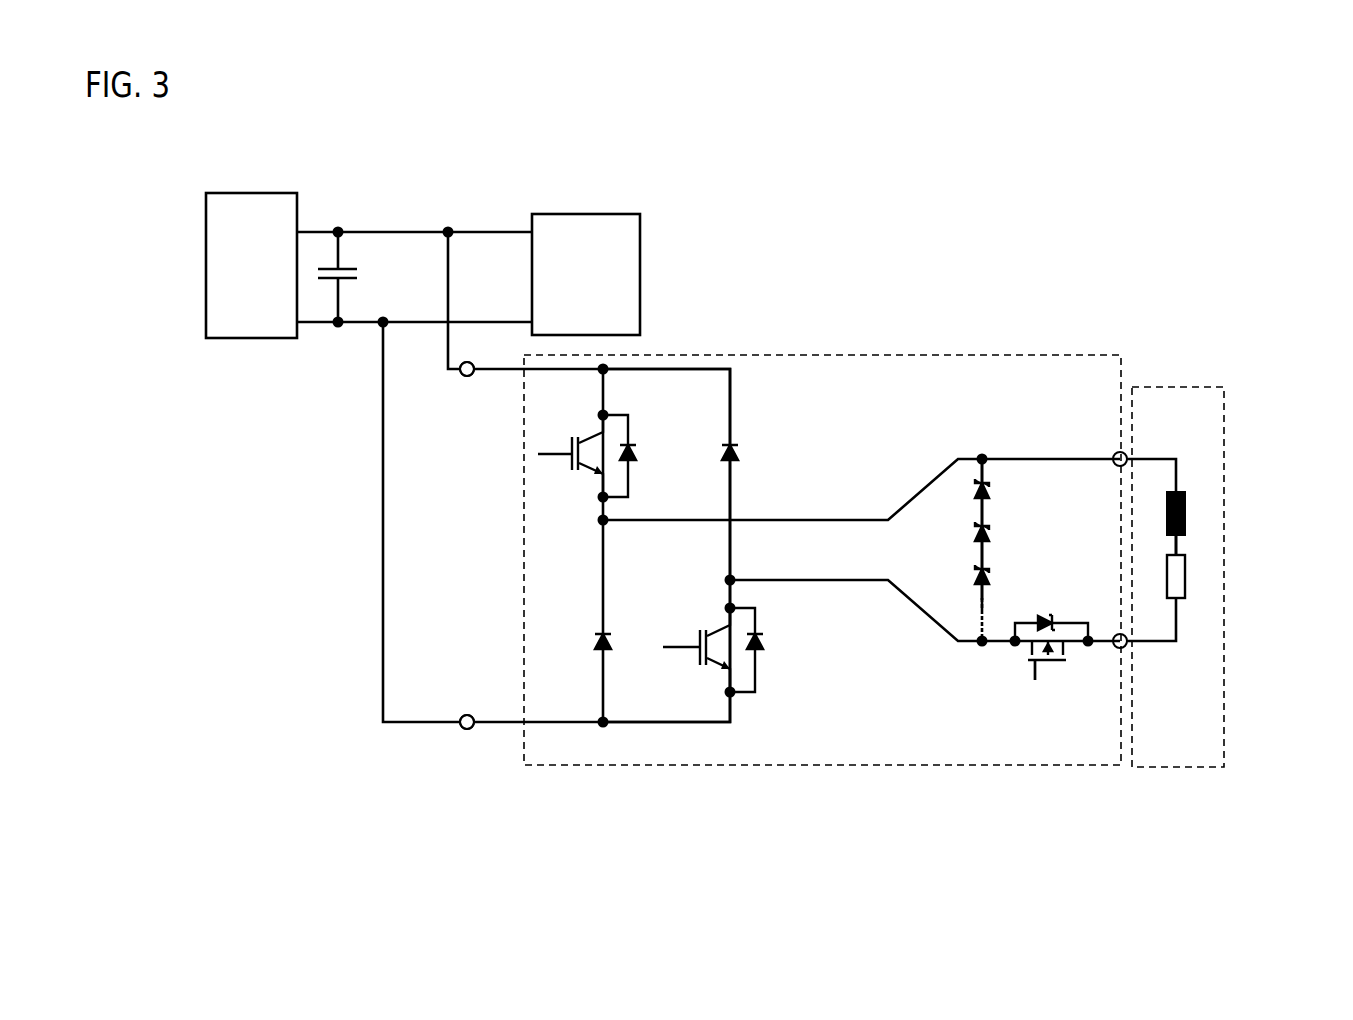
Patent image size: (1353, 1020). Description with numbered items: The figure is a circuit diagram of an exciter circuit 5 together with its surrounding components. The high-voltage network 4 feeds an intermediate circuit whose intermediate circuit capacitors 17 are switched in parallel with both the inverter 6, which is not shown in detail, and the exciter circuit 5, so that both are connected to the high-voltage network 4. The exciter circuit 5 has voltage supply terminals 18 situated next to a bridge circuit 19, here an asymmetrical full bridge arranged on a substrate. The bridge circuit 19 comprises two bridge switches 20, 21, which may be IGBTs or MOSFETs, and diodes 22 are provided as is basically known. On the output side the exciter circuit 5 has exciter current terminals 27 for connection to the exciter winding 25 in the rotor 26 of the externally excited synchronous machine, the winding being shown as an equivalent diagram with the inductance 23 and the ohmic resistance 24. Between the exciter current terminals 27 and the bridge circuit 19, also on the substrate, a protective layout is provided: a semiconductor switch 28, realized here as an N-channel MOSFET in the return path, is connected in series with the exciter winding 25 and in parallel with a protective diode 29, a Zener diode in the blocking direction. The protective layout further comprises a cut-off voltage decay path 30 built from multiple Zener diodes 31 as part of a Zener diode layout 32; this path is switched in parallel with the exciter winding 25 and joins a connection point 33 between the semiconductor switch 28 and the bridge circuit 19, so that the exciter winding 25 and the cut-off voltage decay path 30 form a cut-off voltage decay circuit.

The high-voltage network 4 is at (263, 340).
The inverter 6 is at (588, 215).
The intermediate circuit capacitors 17 is at (364, 279).
The voltage supply terminals 18 is at (462, 380).
The bridge circuit 19 is at (742, 407).
The exciter circuit 5 is at (985, 388).
The bridge switch 20 is at (566, 462).
The bridge switch 21 is at (712, 672).
The freewheeling diodes 22 is at (650, 443).
The inductance 23 is at (1185, 512).
The ohmic resistance 24 is at (1185, 578).
The exciter winding 25 is at (1190, 538).
The rotor 26 is at (1224, 730).
The exciter current terminals 27 is at (1113, 452).
The semiconductor switch 28 is at (1040, 690).
The protective diode 29 is at (1076, 610).
The cut-off voltage decay path 30 is at (978, 480).
The Zener diode 31 is at (1002, 500).
The Zener diode layout 32 is at (966, 484).
The connection point 33 is at (981, 652).